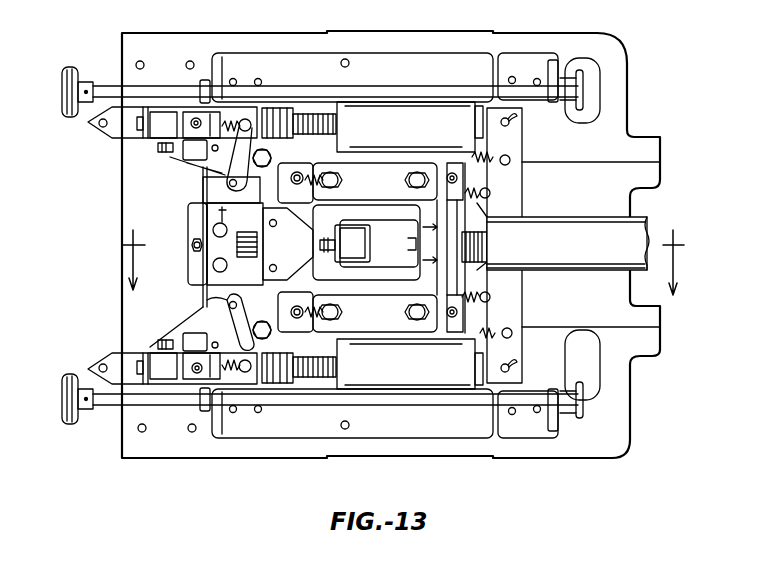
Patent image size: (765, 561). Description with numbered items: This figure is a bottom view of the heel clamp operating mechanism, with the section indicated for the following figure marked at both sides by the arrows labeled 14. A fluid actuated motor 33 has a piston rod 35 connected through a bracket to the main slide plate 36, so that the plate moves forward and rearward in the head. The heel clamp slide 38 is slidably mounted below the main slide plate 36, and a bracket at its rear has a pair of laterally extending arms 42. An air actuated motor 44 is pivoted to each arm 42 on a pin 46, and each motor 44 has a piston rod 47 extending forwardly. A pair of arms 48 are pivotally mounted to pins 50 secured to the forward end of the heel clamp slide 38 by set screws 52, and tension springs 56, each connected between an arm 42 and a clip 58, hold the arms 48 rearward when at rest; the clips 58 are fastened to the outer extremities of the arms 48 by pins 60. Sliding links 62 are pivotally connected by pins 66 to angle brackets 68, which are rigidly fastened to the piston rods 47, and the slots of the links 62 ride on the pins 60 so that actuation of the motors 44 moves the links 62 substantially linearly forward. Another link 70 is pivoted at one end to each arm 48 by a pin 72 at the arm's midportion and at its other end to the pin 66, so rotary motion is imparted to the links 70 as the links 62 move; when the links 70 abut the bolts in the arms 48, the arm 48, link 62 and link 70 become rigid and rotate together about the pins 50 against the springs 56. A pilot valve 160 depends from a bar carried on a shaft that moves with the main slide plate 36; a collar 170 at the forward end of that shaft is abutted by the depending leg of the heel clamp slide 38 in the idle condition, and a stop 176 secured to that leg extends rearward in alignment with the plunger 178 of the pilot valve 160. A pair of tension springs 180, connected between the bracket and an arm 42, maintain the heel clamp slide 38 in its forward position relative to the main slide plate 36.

The section line of FIG. 14 is at (407, 249).
The fluid actuated motor 33 is at (584, 251).
The piston rod 35 is at (458, 257).
The main slide plate 36 is at (338, 450).
The heel clamp slide 38 is at (400, 251).
The arms 42 is at (514, 141).
The air actuated motor 44 is at (440, 129).
The pin 46 is at (512, 369).
The piston rod 47 is at (300, 114).
The arms 48 is at (210, 193).
The pins 50 is at (216, 226).
The set screws 52 is at (219, 212).
The tension springs 56 is at (228, 137).
The clip 58 is at (197, 116).
The pins 60 is at (192, 120).
The sliding links 62 is at (180, 380).
The pins 66 is at (243, 373).
The angle brackets 68 is at (275, 384).
The link 70 is at (212, 178).
The pins 72 is at (220, 298).
The pilot valve 160 is at (358, 242).
The collar 170 is at (263, 267).
The stop 176 is at (297, 255).
The plunger 178 is at (323, 238).
The tension springs 180 is at (367, 179).